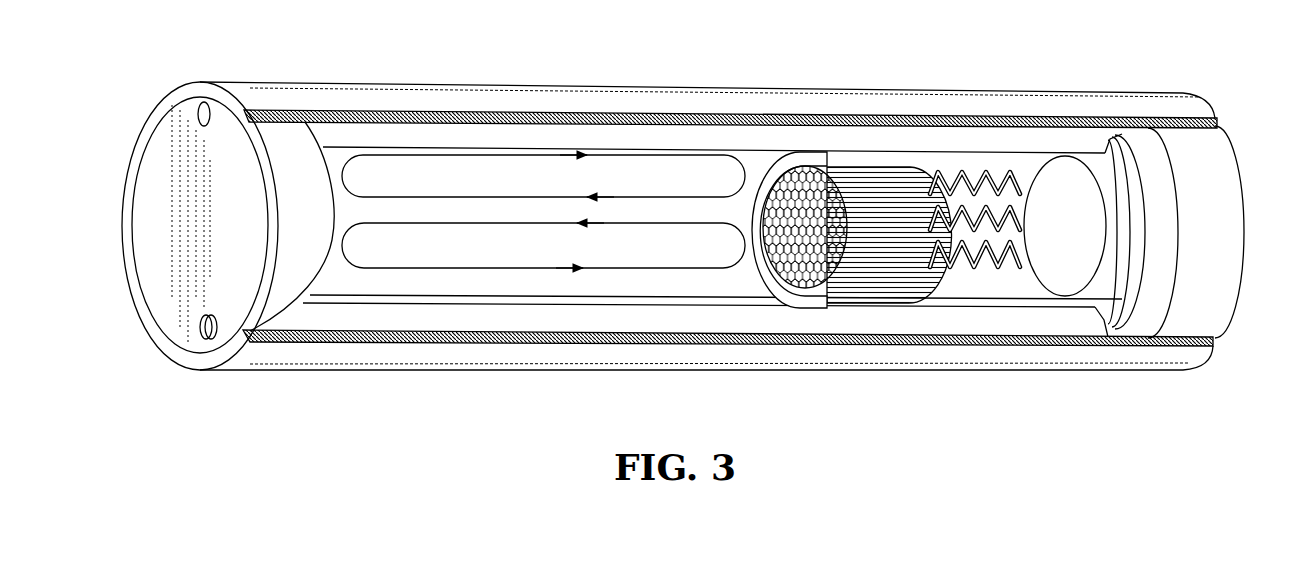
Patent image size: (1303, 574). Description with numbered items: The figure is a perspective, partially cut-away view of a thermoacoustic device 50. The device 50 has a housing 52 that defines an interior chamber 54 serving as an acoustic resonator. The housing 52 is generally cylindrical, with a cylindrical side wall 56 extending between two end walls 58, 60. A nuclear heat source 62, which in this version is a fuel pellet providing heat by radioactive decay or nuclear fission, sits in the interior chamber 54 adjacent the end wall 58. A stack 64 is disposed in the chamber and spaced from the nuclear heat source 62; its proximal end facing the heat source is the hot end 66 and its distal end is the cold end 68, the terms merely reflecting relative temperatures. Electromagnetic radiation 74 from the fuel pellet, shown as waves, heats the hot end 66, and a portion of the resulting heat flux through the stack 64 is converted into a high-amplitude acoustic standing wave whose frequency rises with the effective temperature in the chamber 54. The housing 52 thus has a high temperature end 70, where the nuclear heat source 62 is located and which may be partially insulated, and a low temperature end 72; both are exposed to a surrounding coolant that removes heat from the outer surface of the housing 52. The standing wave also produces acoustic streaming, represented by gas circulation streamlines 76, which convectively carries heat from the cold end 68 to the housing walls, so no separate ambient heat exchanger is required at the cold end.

The thermoacoustic device 50 is at (696, 215).
The housing 52 is at (720, 87).
The interior chamber 54 is at (467, 217).
The cylindrical side wall 56 is at (1018, 360).
The end wall 58 is at (1225, 235).
The end wall 60 is at (245, 229).
The nuclear heat source 62 is at (1067, 182).
The stack 64 is at (860, 187).
The hot end 66 is at (925, 187).
The cold end 68 is at (802, 192).
The high temperature end 70 is at (1135, 363).
The low temperature end 72 is at (308, 369).
The electromagnetic radiation 74 is at (1008, 172).
The gas circulation streamlines 76 is at (508, 268).